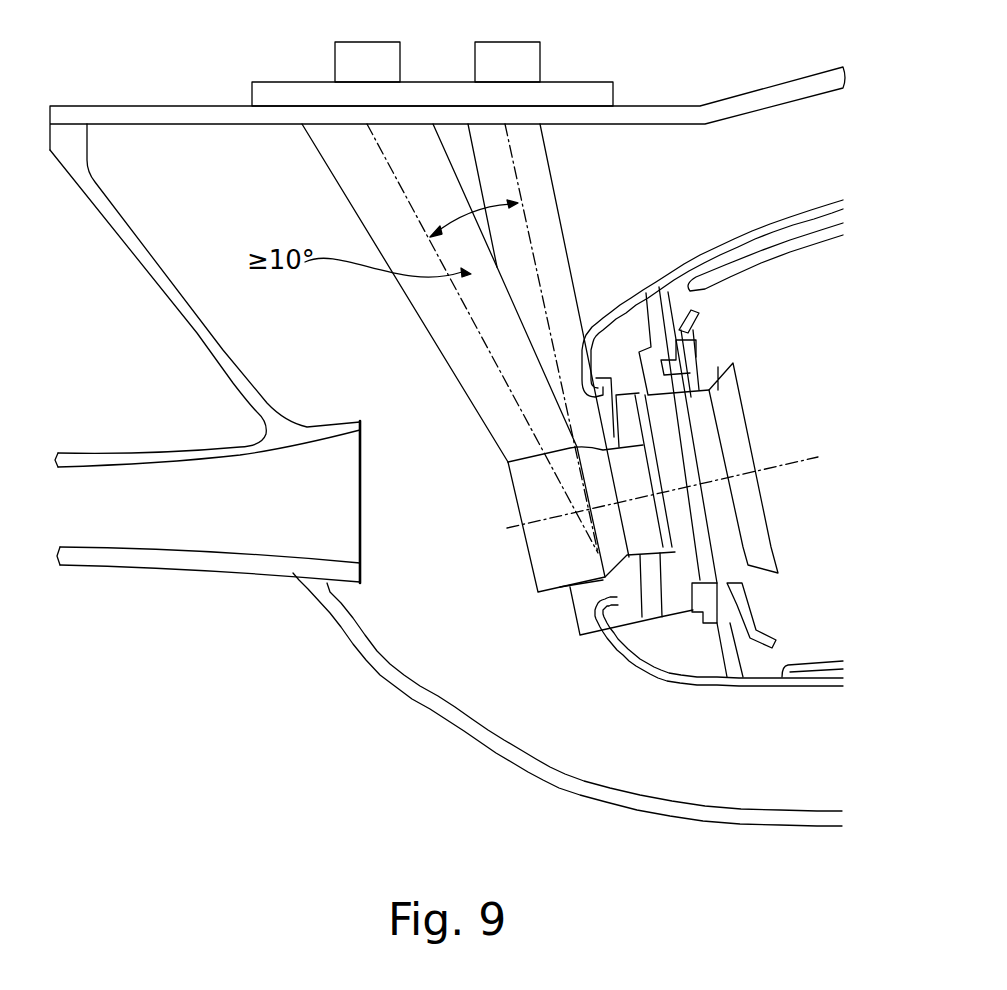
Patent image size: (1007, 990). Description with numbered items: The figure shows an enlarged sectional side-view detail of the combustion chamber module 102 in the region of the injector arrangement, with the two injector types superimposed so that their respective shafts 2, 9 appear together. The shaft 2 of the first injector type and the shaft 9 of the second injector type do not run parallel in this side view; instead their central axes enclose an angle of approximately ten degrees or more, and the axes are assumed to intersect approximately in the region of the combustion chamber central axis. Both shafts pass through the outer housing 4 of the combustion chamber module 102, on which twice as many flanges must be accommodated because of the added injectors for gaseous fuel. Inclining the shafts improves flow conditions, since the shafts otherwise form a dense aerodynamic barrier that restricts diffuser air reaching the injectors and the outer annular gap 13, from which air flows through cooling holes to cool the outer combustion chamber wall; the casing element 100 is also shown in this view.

The shaft 2 is at (415, 340).
The outer housing 4 is at (735, 107).
The shaft 9 is at (575, 195).
The outer annular gap 13 is at (784, 174).
The turbine casing 100 is at (752, 700).
The combustion chamber module 102 is at (423, 740).